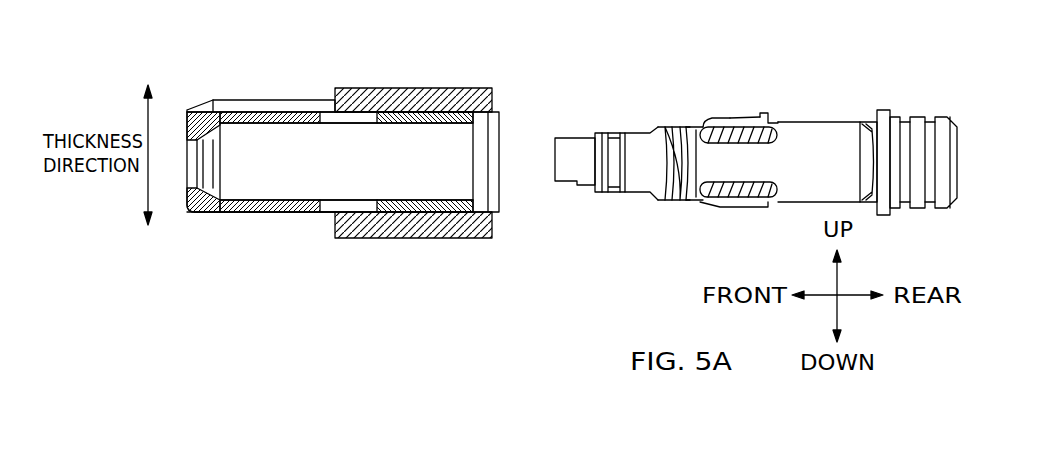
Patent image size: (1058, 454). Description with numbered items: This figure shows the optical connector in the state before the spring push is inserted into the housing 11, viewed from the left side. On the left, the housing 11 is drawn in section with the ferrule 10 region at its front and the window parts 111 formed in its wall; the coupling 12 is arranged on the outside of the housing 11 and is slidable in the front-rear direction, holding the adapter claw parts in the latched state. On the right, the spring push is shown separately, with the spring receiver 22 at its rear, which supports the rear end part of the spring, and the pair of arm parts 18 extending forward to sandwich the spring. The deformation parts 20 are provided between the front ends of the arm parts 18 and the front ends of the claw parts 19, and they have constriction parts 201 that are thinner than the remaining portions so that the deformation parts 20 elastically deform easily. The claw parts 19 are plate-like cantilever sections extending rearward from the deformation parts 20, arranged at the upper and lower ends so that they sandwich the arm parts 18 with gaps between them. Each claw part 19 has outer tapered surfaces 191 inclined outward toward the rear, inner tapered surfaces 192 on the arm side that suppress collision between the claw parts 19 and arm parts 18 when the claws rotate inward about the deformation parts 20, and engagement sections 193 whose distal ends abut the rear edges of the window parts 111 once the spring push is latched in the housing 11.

The ferrule 10 is at (584, 145).
The housing 11 is at (276, 104).
The window parts 111 is at (325, 118).
The coupling 12 is at (405, 92).
The arm parts 18 is at (725, 172).
The claw parts 19 is at (761, 75).
The outer tapered surfaces 191 is at (712, 118).
The inner tapered surfaces 192 is at (736, 118).
The engagement sections 193 is at (795, 84).
The deformation parts 20 is at (686, 126).
The constriction parts 201 is at (693, 134).
The spring receiver 22 is at (854, 133).